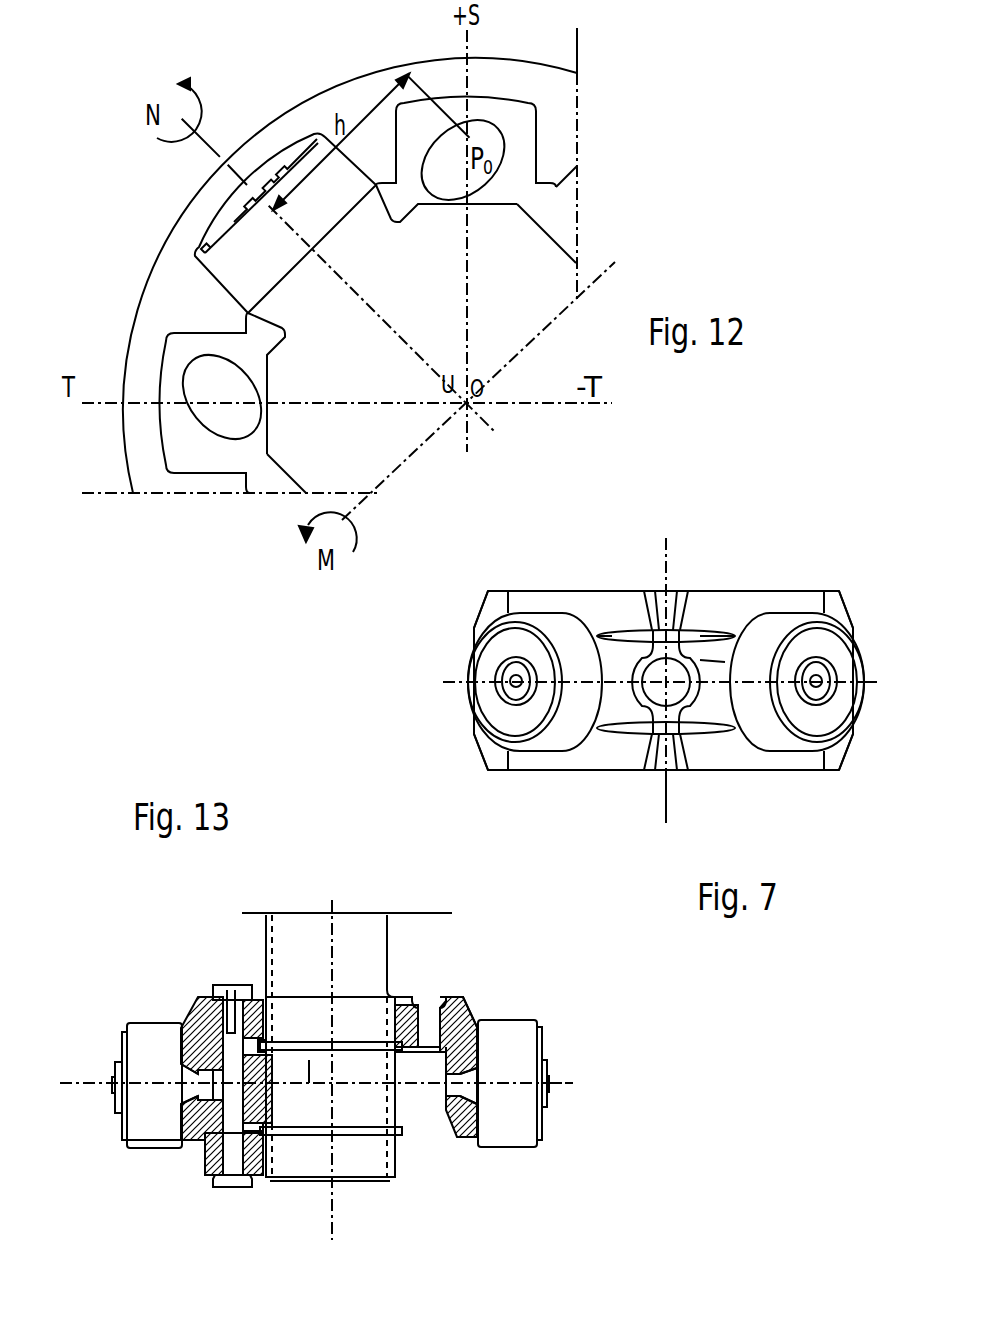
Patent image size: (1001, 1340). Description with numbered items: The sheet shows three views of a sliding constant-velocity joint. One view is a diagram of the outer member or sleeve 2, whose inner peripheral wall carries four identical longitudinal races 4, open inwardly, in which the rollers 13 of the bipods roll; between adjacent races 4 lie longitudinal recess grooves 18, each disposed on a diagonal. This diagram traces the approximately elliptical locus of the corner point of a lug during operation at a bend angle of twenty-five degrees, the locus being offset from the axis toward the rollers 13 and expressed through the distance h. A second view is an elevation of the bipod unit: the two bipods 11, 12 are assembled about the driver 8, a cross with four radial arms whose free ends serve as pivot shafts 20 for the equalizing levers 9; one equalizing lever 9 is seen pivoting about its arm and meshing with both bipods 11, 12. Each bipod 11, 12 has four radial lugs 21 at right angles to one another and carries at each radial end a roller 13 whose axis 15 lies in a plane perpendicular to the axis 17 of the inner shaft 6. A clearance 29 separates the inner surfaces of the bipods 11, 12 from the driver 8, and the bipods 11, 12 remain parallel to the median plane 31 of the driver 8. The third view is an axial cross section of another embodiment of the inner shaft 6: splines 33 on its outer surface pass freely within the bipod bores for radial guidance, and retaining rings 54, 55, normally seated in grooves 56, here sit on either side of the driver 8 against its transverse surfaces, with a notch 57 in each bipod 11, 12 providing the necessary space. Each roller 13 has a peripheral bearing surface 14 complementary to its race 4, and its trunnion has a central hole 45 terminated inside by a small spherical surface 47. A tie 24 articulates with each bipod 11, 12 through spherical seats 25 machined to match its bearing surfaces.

In FIG. 12, the outer member or sleeve 2 is at (118, 352).
In FIG. 12, the longitudinal races 4 is at (222, 222).
In FIG. 12, the roller 13 is at (202, 244).
In FIG. 7, the roller 13 is at (542, 613).
In FIG. 13, the roller 13 is at (116, 1139).
In FIG. 12, the longitudinal recess grooves 18 is at (518, 128).
In FIG. 7, the bipod 12 is at (585, 591).
In FIG. 13, the bipod 12 is at (258, 993).
In FIG. 7, the radial lugs 21 is at (494, 608).
In FIG. 7, the clearance 29 is at (611, 630).
In FIG. 7, the pivot shaft 20 is at (640, 652).
In FIG. 7, the equalizing levers 9 is at (706, 633).
In FIG. 7, the driving member or driver 8 is at (717, 662).
In FIG. 13, the driving member or driver 8 is at (290, 1135).
In FIG. 7, the bipod 11 is at (582, 771).
In FIG. 13, the bipod 11 is at (263, 1192).
In FIG. 7, the axis of the inner shaft 17 is at (666, 800).
In FIG. 13, the axis of the inner shaft 17 is at (336, 935).
In FIG. 7, the median plane of the driver 31 is at (877, 683).
In FIG. 13, the median plane of the driver 31 is at (309, 1080).
In FIG. 13, the axes of the rollers 15 is at (88, 1080).
In FIG. 13, the peripheral bearing surface 14 is at (160, 1140).
In FIG. 13, the tie 24 is at (225, 1188).
In FIG. 13, the retaining ring 54 is at (258, 1097).
In FIG. 13, the grooves 56 is at (367, 1040).
In FIG. 13, the splines 33 is at (375, 1125).
In FIG. 13, the inner input shaft 6 is at (413, 913).
In FIG. 13, the spherical or quasi-spherical surface 47 is at (480, 1087).
In FIG. 13, the retaining ring 55 is at (442, 1087).
In FIG. 13, the central hole 45 is at (540, 1142).
In FIG. 13, the notch 57 is at (397, 929).
In FIG. 13, the spherical seats 25 is at (443, 995).